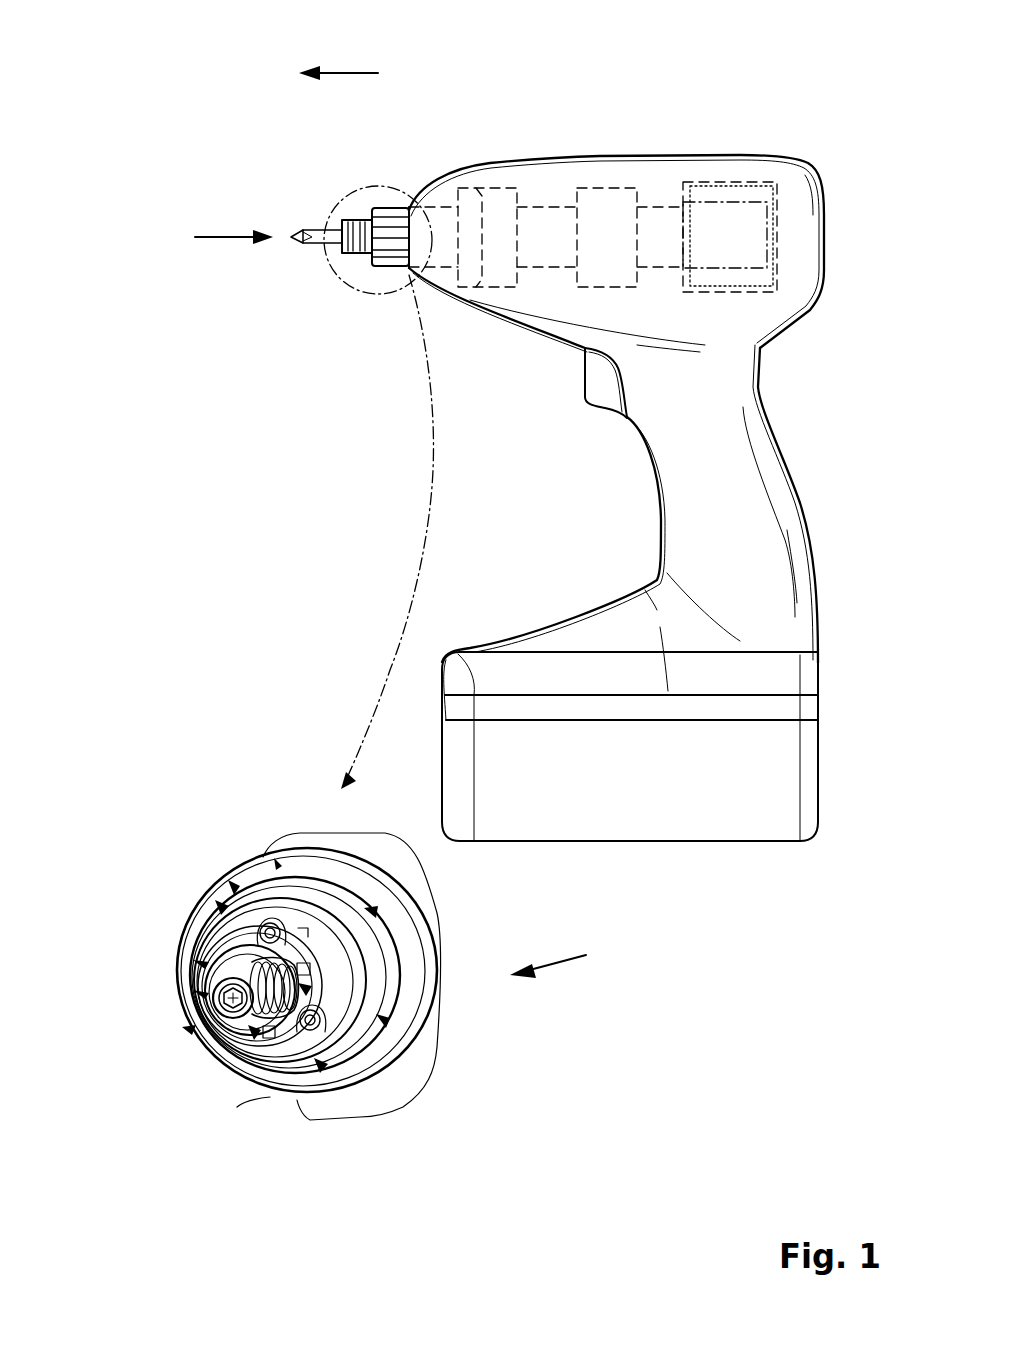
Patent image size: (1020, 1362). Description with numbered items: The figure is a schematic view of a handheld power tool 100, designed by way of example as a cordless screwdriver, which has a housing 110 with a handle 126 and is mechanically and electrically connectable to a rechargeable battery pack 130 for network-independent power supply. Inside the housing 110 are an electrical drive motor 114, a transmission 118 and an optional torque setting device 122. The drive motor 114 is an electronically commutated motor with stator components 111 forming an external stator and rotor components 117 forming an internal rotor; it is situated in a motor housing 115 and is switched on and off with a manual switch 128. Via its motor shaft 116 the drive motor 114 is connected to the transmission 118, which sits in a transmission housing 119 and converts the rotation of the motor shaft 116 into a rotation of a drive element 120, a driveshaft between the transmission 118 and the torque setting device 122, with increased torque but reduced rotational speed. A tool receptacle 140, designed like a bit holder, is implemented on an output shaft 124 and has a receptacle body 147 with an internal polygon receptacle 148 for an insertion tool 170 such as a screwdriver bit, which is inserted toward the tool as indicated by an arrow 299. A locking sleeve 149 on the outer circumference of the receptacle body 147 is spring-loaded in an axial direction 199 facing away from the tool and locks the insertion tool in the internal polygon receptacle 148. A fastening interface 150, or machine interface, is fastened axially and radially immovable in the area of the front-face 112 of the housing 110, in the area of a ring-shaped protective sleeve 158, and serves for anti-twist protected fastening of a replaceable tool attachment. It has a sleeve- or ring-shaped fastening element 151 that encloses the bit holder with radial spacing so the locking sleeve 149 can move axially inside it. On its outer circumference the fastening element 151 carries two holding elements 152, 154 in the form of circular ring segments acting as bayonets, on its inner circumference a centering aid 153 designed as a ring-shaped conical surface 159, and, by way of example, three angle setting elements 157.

The handheld power tool 100 is at (499, 589).
The housing 110 is at (790, 295).
The stator components 111 is at (718, 183).
The front-face 112 is at (332, 1085).
The electrical drive motor 114 is at (755, 236).
The motor housing 115 is at (775, 268).
The motor shaft 116 is at (660, 212).
The rotor components 117 is at (767, 196).
The transmission 118 is at (592, 203).
The transmission housing 119 is at (613, 185).
The drive element 120 is at (548, 222).
The torque setting device 122 is at (490, 200).
The output shaft 124 is at (434, 225).
The handle 126 is at (780, 556).
The manual switch 128 is at (592, 378).
The rechargeable battery pack 130 is at (780, 777).
The tool receptacle 140 is at (342, 205).
The receptacle body 147 is at (214, 996).
The internal polygon receptacle 148 is at (216, 1005).
The locking sleeve 149 is at (232, 1028).
The fastening interface 150 is at (310, 595).
The fastening element 151 is at (325, 945).
The holding element 152 is at (235, 910).
The centering aid 153 is at (208, 968).
The holding element 154 is at (285, 1068).
The angle setting elements 157 is at (222, 960).
The protective sleeve 158 is at (388, 262).
The ring-shaped conical surface 159 is at (372, 1010).
The insertion tool 170 is at (322, 245).
The axial direction 199 is at (354, 73).
The arrow 299 is at (226, 237).